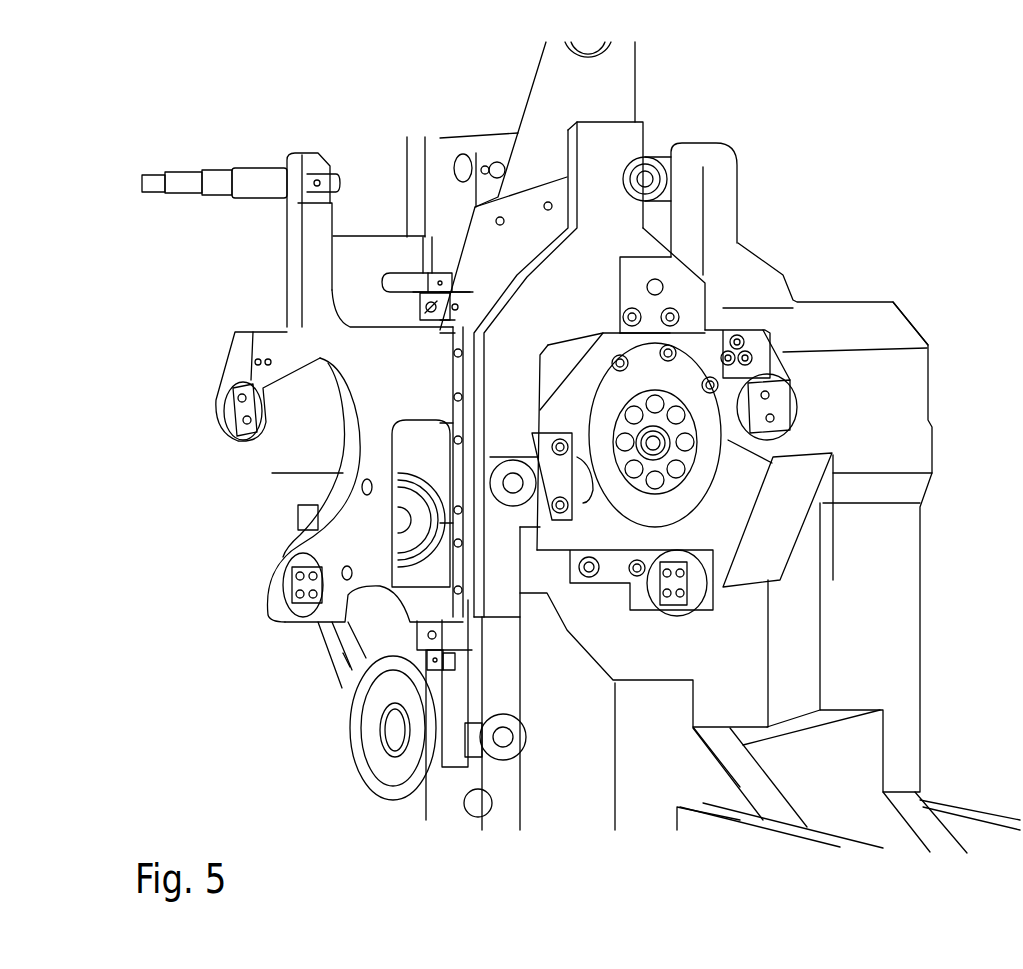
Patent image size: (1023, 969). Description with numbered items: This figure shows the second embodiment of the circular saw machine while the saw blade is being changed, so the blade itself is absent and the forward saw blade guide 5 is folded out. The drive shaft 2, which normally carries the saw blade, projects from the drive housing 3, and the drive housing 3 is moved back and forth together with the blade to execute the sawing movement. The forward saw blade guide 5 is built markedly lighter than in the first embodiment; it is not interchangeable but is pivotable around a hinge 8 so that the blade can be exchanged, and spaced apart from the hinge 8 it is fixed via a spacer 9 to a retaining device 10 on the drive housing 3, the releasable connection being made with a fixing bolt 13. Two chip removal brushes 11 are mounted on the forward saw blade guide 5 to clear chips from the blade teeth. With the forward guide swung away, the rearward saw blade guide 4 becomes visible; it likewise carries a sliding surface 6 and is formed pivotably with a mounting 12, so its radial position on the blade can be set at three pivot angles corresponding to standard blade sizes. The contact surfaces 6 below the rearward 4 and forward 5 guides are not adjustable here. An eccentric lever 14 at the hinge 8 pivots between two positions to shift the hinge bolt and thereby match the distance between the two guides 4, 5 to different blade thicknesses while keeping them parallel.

The drive shaft 2 is at (687, 470).
The drive housing 3 is at (867, 320).
The rearward saw blade guide 4 is at (707, 327).
The forward saw blade guide 5 is at (378, 405).
The sliding surface 6 is at (227, 422).
The hinge 8 is at (430, 636).
The spacer 9 is at (678, 170).
The retaining device 10 is at (725, 187).
The chip removal brushes 11 is at (400, 773).
The mounting 12 is at (230, 387).
The fixing bolt 13 is at (268, 178).
The eccentric lever 14 is at (400, 282).